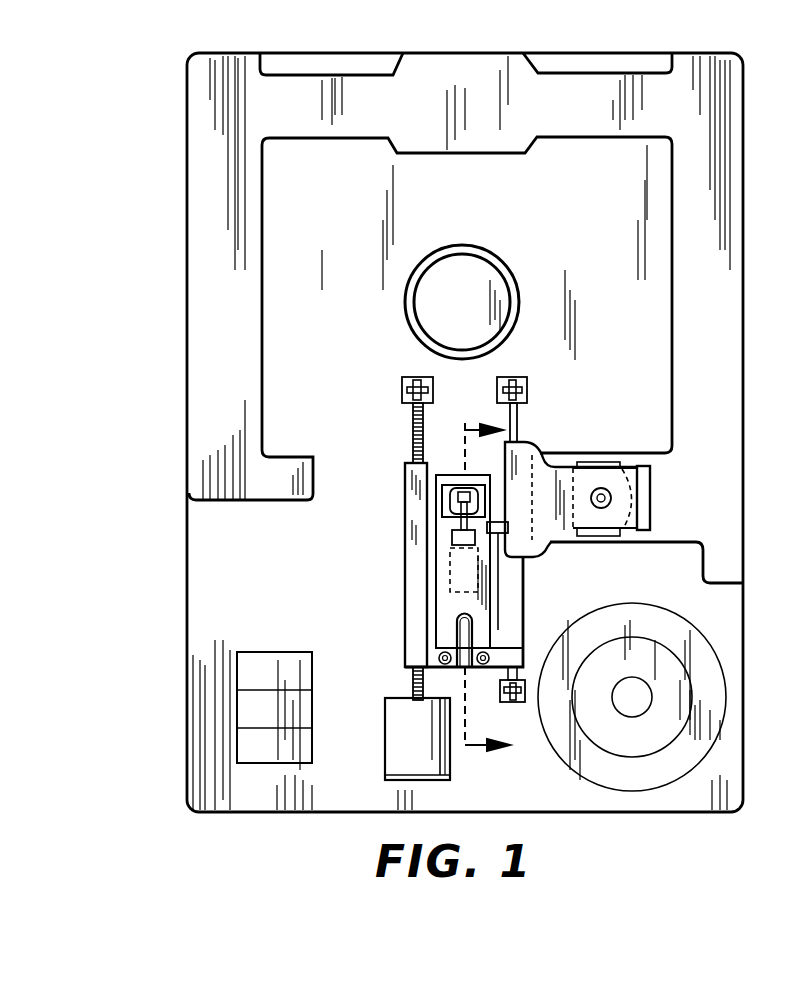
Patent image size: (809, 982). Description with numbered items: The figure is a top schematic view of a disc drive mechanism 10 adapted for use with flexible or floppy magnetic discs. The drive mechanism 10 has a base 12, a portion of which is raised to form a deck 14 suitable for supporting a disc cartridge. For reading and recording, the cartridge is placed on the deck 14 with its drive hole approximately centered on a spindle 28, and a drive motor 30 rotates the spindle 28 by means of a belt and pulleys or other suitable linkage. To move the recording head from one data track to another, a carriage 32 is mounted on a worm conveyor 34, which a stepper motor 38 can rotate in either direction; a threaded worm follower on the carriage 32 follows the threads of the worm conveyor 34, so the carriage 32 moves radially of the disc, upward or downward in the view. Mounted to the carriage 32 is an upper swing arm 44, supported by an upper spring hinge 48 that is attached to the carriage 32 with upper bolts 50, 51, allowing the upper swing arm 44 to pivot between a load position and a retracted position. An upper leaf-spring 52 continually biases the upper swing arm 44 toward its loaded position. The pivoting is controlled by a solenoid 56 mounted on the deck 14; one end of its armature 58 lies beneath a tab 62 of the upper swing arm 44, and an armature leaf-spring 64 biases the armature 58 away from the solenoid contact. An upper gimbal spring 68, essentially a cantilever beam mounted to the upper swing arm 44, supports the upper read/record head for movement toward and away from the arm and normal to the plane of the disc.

The disc drive mechanism 10 is at (170, 112).
The base 12 is at (352, 221).
The deck 14 is at (212, 208).
The spindle 28 is at (500, 262).
The drive motor 30 is at (703, 667).
The carriage 32 is at (415, 566).
The worm conveyor 34 is at (413, 422).
The stepper motor 38 is at (400, 762).
The upper swing arm 44 is at (490, 582).
The upper spring hinge 48 is at (440, 655).
The upper bolt 50 is at (413, 673).
The upper bolt 51 is at (492, 652).
The upper leaf-spring 52 is at (455, 623).
The solenoid 56 is at (600, 462).
The armature 58 is at (625, 478).
The tab 62 is at (508, 528).
The armature leaf-spring 64 is at (650, 511).
The upper gimbal spring 68 is at (450, 500).